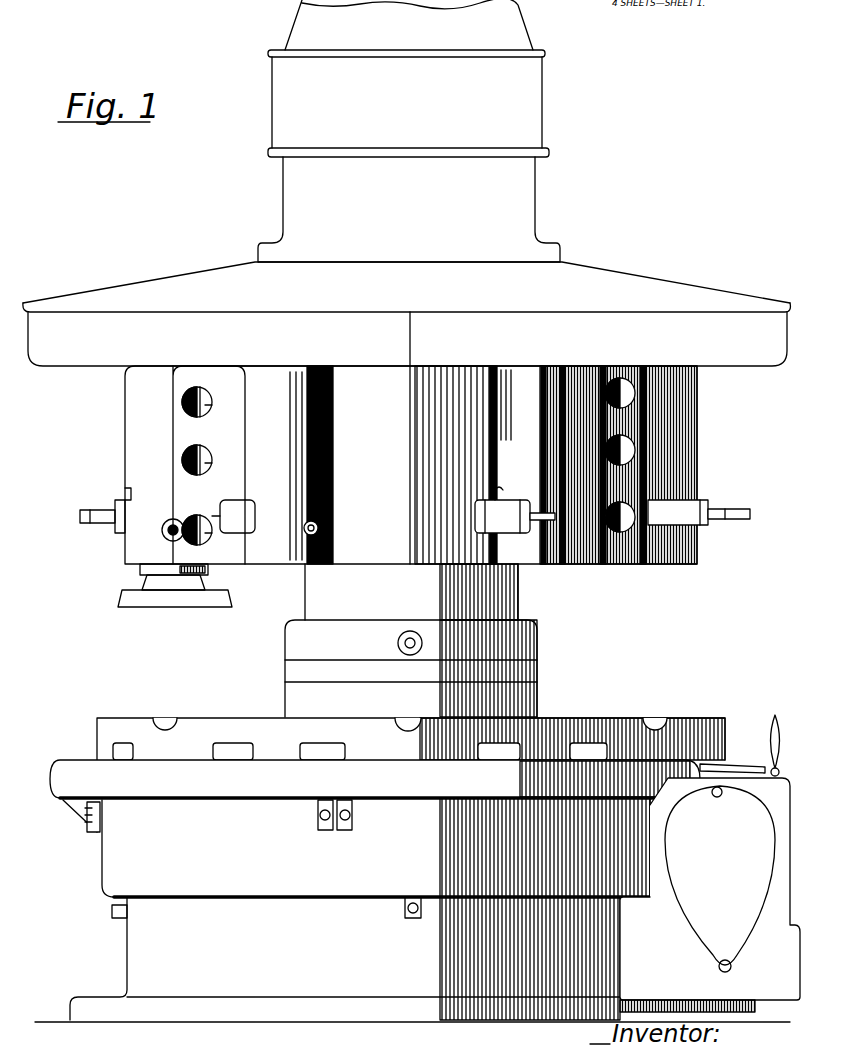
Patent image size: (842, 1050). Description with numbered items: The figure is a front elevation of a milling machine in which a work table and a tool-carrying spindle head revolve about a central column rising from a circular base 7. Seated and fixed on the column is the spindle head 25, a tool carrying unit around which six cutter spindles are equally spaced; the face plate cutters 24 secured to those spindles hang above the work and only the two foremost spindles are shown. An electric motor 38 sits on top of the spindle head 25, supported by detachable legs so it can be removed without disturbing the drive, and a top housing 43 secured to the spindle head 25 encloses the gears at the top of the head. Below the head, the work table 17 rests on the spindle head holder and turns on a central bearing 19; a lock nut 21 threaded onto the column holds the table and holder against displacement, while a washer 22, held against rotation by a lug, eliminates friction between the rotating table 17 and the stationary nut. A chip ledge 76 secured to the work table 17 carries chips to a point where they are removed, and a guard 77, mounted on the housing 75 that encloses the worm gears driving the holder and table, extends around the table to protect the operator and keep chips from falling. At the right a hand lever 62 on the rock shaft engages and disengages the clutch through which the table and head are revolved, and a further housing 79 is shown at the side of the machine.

The electric motor 38 is at (408, 103).
The top housing 43 is at (428, 299).
The spindle head 25 is at (415, 465).
The face plate cutters 24 is at (200, 598).
The central bearing 19 is at (396, 606).
The lock nut 21 is at (411, 668).
The washer 22 is at (411, 673).
The work table 17 is at (233, 730).
The guard 77 is at (375, 796).
The chip ledge 76 is at (738, 765).
The hand lever 62 is at (772, 734).
The housing 75 is at (367, 847).
The circular base 7 is at (412, 959).
The side box 79 is at (710, 895).